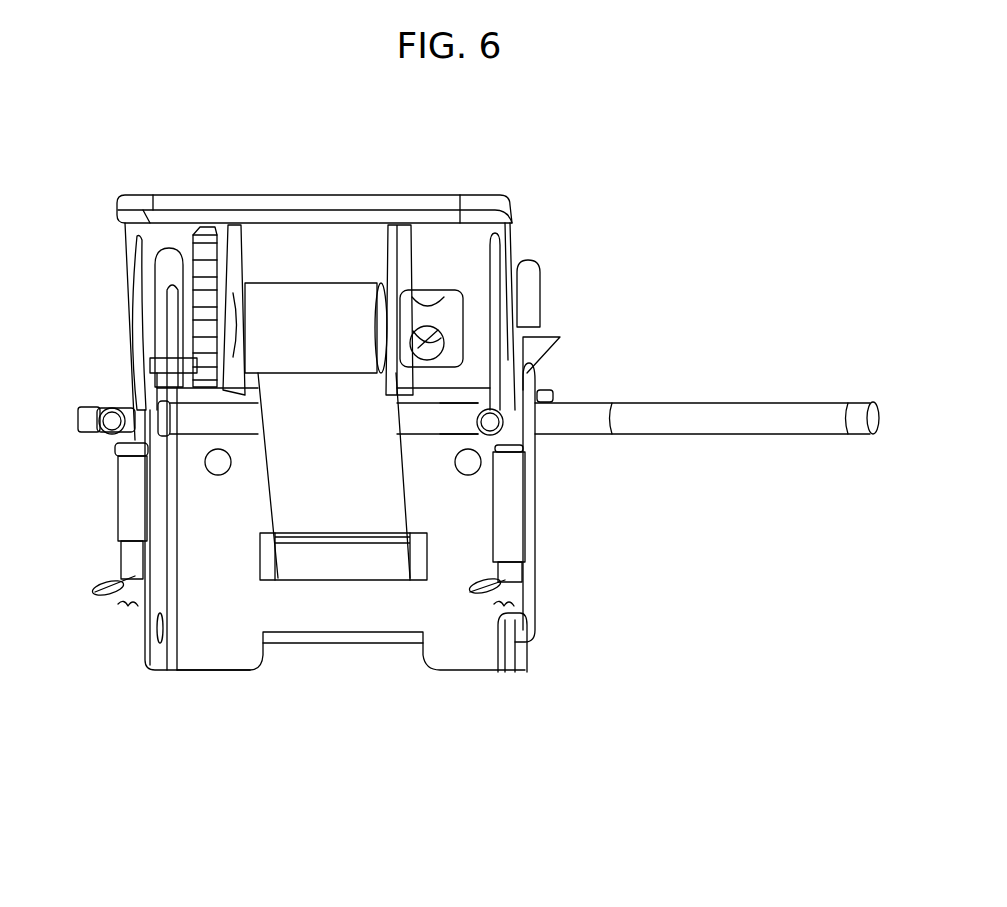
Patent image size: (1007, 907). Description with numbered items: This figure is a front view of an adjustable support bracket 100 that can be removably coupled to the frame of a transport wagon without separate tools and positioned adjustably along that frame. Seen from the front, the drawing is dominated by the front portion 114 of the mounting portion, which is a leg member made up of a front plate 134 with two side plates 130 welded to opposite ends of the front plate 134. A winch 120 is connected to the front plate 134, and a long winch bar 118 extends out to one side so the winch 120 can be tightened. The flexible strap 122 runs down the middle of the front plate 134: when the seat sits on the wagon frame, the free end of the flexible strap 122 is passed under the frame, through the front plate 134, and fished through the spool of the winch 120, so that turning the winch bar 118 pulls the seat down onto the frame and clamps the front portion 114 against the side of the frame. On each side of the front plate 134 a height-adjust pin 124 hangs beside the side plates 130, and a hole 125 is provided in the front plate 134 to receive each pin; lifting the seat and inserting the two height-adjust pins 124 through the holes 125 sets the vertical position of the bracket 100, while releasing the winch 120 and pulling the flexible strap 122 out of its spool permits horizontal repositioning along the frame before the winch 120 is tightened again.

The adjustable support bracket 100 is at (788, 722).
The front portion 114 is at (123, 758).
The winch bar 118 is at (795, 413).
The winch 120 is at (442, 318).
The flexible strap 122 is at (340, 525).
The height-adjust pin 124 is at (133, 588).
The hole 125 is at (212, 460).
The side plate 130 is at (160, 652).
The front plate 134 is at (200, 658).